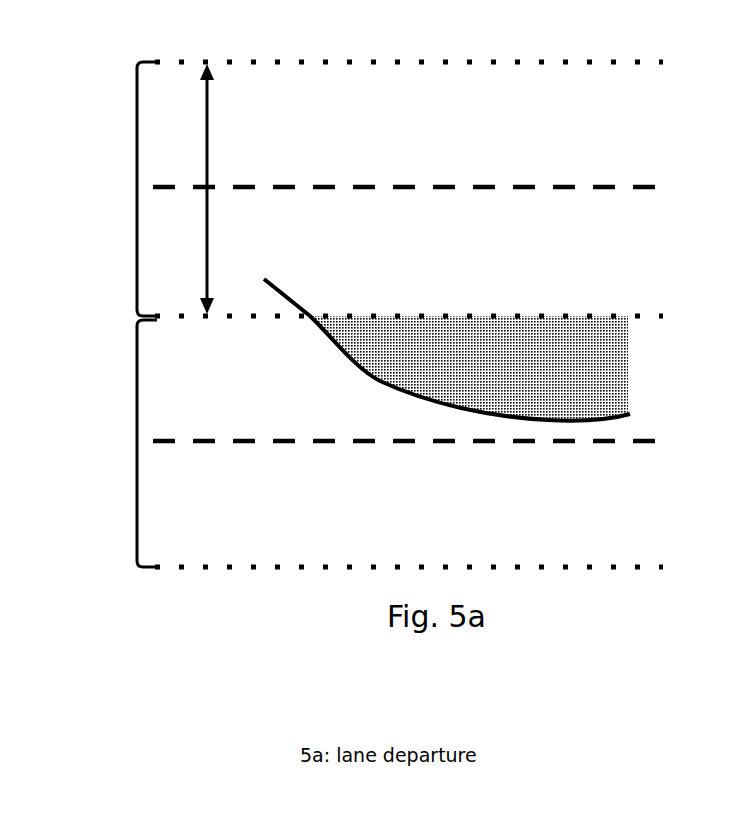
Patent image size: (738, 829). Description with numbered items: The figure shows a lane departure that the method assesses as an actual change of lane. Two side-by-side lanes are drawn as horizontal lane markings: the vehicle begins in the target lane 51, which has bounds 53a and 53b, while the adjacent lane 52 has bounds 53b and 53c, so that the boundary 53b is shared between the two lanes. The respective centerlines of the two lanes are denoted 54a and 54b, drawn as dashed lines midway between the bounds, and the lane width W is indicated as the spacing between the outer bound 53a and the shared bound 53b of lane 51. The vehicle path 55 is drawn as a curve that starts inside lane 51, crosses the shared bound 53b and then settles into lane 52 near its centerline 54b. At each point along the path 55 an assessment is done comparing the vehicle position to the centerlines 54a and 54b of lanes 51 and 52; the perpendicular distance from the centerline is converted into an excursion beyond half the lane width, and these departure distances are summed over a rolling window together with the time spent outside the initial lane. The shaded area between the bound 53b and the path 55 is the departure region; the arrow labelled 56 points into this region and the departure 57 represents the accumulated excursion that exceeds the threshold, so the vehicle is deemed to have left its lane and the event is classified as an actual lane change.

The target lane 51 is at (137, 187).
The adjacent lane 52 is at (137, 441).
The lane bound 53a is at (437, 60).
The lane bound 53b is at (437, 313).
The lane bound 53c is at (437, 565).
The centerline 54a is at (436, 187).
The centerline 54b is at (436, 438).
The path 55 is at (429, 330).
The lane departure region 56 is at (393, 322).
The departure 57 is at (548, 366).